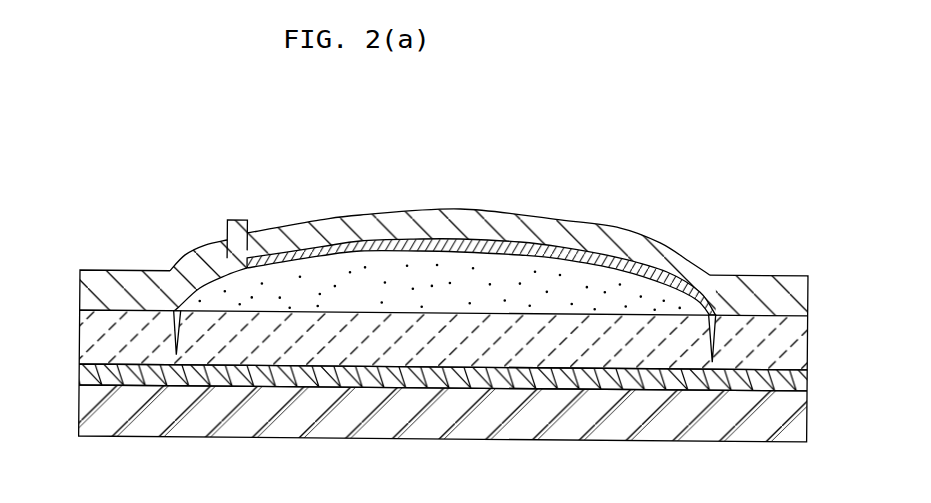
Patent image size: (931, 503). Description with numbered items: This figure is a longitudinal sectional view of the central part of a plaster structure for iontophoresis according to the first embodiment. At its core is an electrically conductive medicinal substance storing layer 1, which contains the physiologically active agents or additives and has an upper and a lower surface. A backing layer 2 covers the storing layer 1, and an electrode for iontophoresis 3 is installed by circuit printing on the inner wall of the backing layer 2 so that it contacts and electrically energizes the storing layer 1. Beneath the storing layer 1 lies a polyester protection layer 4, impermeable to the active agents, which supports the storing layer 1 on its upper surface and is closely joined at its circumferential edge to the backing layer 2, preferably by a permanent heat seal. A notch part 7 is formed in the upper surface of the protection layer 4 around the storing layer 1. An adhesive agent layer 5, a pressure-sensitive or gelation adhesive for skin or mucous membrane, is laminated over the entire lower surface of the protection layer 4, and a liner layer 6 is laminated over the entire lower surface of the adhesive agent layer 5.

The medicinal substance storing layer 1 is at (460, 269).
The backing layer 2 is at (783, 277).
The electrode for iontophoresis 3 is at (562, 244).
The protection layer 4 is at (783, 329).
The adhesive agent layer 5 is at (793, 374).
The liner layer 6 is at (783, 413).
The notch part 7 is at (177, 306).